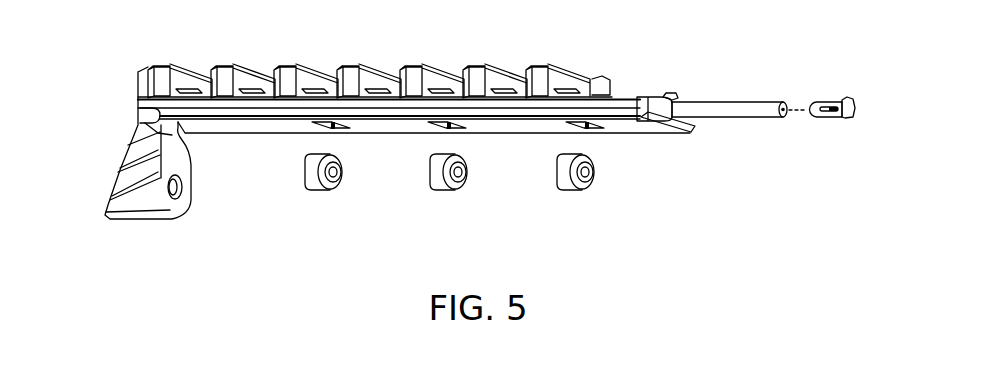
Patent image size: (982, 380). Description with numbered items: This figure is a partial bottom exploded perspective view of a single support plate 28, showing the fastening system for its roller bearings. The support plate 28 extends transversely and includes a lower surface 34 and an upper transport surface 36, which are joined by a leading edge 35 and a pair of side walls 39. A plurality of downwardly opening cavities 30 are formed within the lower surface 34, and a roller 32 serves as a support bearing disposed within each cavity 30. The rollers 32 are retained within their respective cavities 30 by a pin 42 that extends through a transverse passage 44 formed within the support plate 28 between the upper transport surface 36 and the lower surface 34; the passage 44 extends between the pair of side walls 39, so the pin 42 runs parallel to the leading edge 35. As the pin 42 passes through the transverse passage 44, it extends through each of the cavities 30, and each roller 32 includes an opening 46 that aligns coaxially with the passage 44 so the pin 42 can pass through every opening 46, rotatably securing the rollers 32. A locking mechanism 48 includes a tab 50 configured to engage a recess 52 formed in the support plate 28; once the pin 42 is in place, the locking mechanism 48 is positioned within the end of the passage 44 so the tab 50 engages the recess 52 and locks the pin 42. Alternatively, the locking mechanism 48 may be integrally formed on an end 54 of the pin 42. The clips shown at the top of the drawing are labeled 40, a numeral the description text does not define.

The support plate 28 is at (645, 97).
The cavity 30 is at (339, 130).
The roller 32 is at (326, 190).
The lower surface 34 is at (668, 145).
The leading edge 35 is at (150, 106).
The upper transport surface 36 is at (611, 71).
The side wall 39 is at (695, 123).
The clips 40 is at (342, 65).
The pin 42 is at (744, 121).
The transverse passage 44 is at (697, 82).
The opening 46 is at (341, 173).
The locking mechanism 48 is at (825, 120).
The tab 50 is at (847, 94).
The recess 52 is at (679, 90).
The end of the pin 54 is at (792, 95).